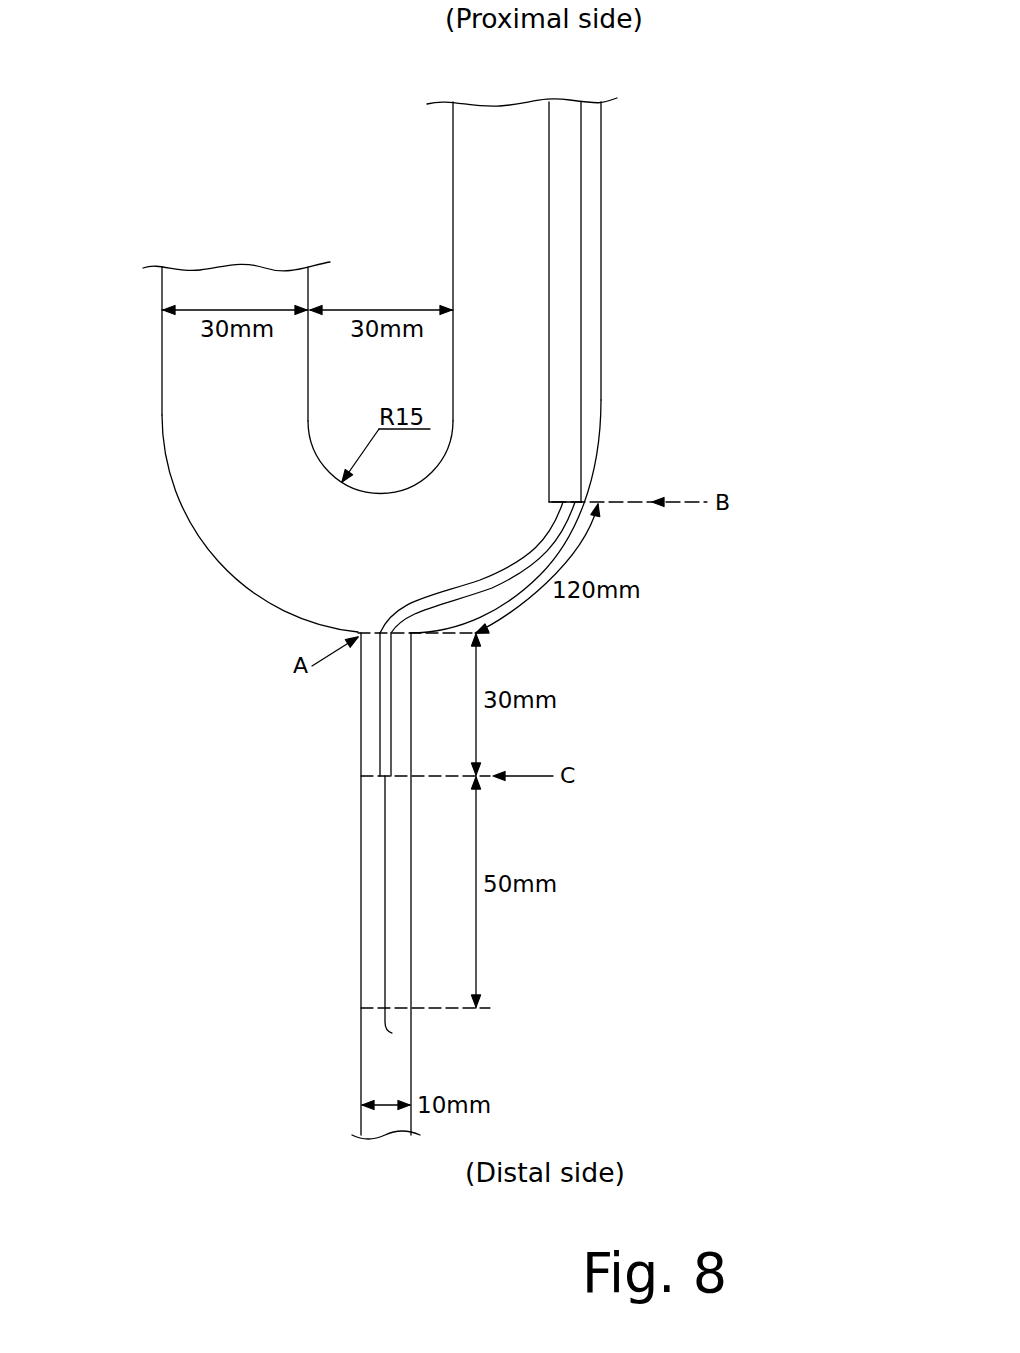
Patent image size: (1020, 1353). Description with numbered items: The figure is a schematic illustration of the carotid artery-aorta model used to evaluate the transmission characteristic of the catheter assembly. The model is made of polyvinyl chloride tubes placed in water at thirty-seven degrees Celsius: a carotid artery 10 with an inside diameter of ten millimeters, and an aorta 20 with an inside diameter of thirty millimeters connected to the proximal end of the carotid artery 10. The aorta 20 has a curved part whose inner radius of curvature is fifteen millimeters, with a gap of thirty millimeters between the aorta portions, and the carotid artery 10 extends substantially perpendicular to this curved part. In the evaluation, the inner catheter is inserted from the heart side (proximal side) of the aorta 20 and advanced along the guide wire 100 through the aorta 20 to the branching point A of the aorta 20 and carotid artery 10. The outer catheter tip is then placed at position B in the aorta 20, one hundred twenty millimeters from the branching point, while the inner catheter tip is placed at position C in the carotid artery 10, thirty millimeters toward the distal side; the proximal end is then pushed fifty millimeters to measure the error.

The carotid artery 10 is at (371, 737).
The aorta 20 is at (592, 415).
The guide wire 100 is at (383, 883).